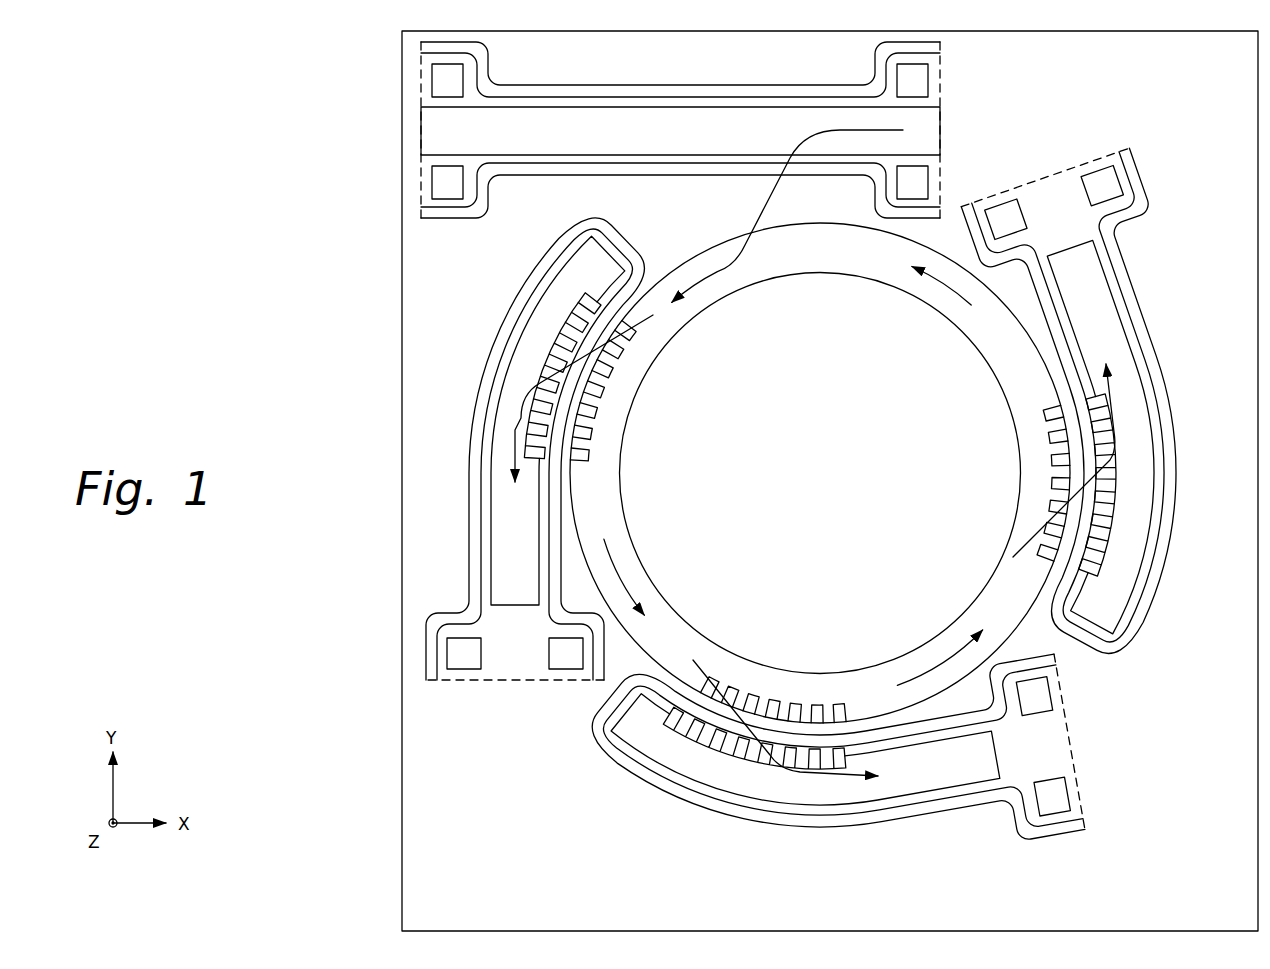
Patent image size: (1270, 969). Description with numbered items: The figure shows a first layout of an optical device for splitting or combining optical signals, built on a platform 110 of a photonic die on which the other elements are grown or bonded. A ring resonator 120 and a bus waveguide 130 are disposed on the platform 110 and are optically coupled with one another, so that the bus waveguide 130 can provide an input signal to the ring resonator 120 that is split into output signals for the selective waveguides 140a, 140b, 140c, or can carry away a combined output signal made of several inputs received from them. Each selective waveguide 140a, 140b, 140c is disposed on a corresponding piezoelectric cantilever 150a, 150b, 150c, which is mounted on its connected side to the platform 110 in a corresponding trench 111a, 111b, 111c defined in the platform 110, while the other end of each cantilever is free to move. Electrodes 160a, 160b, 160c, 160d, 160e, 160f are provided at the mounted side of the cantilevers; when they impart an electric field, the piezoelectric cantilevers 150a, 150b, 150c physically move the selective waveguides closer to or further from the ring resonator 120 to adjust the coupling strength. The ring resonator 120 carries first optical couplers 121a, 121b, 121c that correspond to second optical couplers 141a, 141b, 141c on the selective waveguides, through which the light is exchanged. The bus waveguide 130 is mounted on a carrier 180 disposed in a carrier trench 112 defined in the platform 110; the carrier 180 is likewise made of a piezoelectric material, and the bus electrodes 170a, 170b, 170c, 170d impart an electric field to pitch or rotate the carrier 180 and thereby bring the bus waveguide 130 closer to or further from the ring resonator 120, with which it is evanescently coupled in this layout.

The platform 110 is at (402, 560).
The carrier trench 112 is at (626, 86).
The ring resonator 120 is at (708, 246).
The first optical coupler 121a is at (612, 402).
The first optical coupler 121b is at (783, 705).
The first optical coupler 121c is at (1055, 470).
The bus waveguide 130 is at (680, 125).
The selective waveguide 140a is at (512, 373).
The selective waveguide 140b is at (805, 790).
The selective waveguide 140c is at (1133, 472).
The second optical coupler 141a is at (545, 350).
The second optical coupler 141b is at (740, 755).
The second optical coupler 141c is at (1105, 492).
The piezoelectric cantilever 150a is at (520, 311).
The piezoelectric cantilever 150b is at (875, 808).
The piezoelectric cantilever 150c is at (1145, 548).
The trench 111a is at (530, 284).
The trench 111b is at (660, 778).
The trench 111c is at (1150, 578).
The electrode 160a is at (562, 672).
The electrode 160b is at (462, 672).
The electrode 160c is at (1055, 690).
The electrode 160d is at (1072, 790).
The electrode 160e is at (996, 216).
The electrode 160f is at (1096, 186).
The bus electrode 170a is at (432, 80).
The bus electrode 170b is at (432, 182).
The bus electrode 170c is at (932, 80).
The bus electrode 170d is at (893, 183).
The carrier 180 is at (735, 166).